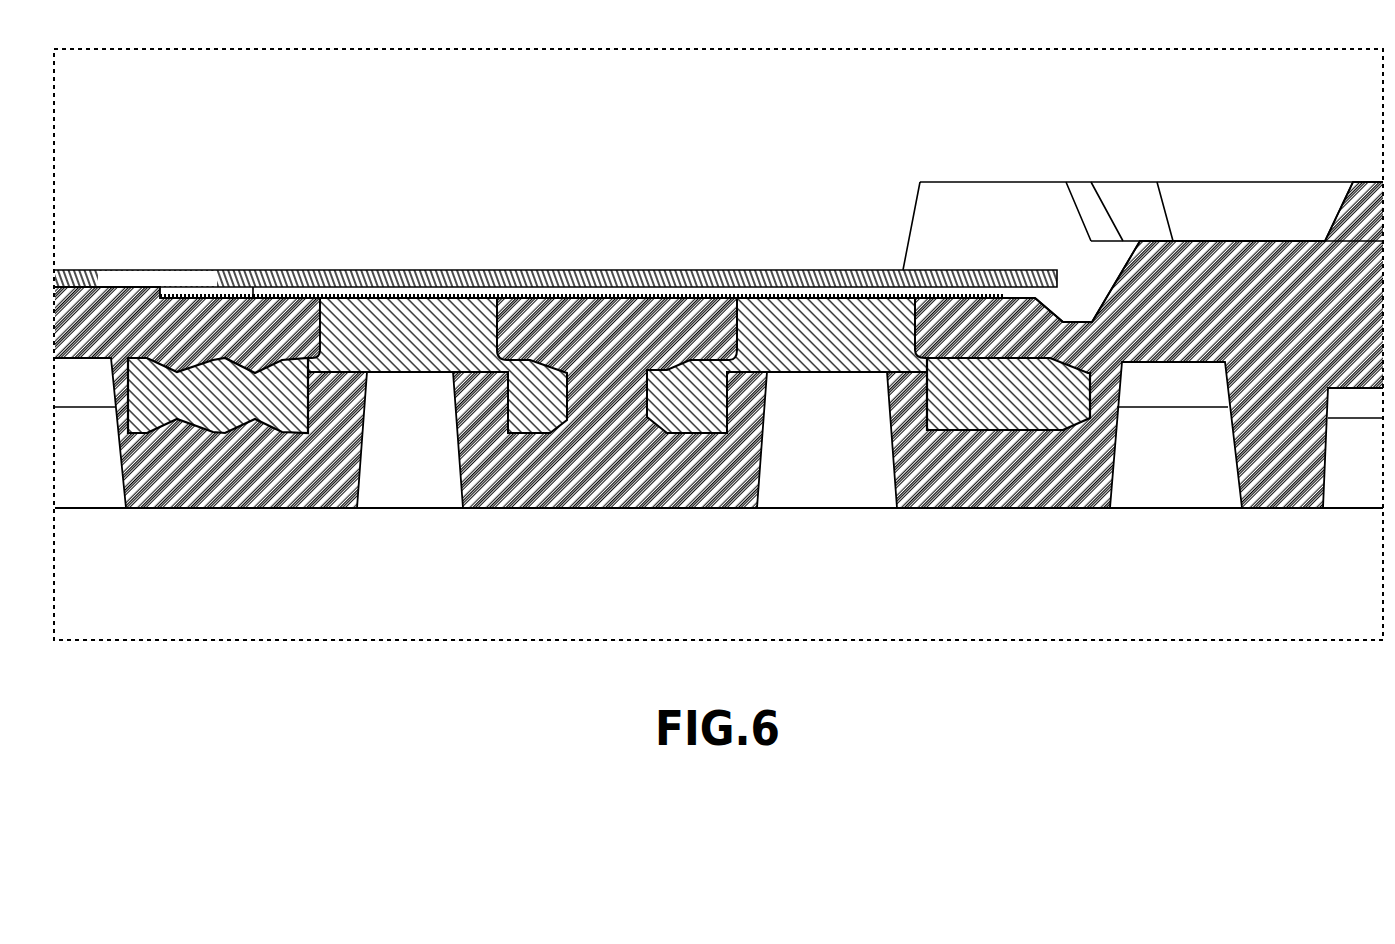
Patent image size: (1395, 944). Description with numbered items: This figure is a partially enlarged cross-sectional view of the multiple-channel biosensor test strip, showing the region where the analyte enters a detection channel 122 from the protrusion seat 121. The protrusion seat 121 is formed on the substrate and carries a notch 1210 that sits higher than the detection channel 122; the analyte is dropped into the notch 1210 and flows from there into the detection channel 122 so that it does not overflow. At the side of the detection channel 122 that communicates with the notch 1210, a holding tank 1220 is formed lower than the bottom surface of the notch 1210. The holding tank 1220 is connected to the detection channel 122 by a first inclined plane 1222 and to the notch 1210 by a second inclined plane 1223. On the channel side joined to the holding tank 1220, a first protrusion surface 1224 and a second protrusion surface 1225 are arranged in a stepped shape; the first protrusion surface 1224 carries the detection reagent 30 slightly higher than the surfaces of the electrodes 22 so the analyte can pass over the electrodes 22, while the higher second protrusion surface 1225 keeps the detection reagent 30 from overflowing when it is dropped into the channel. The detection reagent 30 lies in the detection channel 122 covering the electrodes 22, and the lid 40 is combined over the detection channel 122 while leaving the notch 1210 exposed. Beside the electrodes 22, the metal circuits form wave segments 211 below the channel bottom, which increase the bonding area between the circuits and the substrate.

The detection channel 122 is at (608, 280).
The electrode 22 is at (400, 302).
The wave segment 211 is at (220, 407).
The lid 40 is at (522, 270).
The detection reagent 30 is at (280, 300).
The second protrusion surface 1225 is at (1010, 293).
The first protrusion surface 1224 is at (947, 298).
The second inclined plane 1223 is at (1116, 246).
The first inclined plane 1222 is at (1053, 300).
The holding tank 1220 is at (1090, 321).
The notch 1210 is at (1250, 240).
The protrusion seat 121 is at (1367, 182).